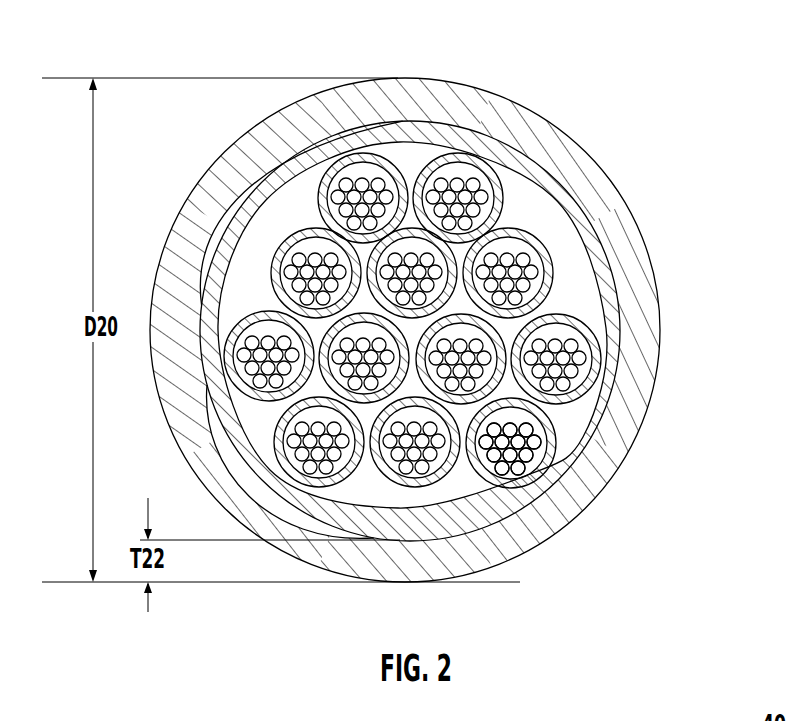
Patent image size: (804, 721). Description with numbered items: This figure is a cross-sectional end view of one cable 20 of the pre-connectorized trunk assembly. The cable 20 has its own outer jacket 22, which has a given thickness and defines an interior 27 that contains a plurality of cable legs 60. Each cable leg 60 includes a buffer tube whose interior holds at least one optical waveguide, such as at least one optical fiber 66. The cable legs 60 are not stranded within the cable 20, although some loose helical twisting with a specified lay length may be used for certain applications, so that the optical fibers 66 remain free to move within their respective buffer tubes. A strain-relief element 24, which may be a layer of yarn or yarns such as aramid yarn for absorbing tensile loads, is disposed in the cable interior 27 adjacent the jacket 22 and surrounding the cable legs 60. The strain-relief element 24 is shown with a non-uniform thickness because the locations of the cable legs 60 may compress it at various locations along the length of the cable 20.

The cable 20 is at (226, 46).
The outer jacket 22 is at (511, 106).
The strain-relief element 24 is at (538, 220).
The interior 27 is at (290, 223).
The cable legs 60 is at (506, 207).
The optical fiber 66 is at (510, 455).